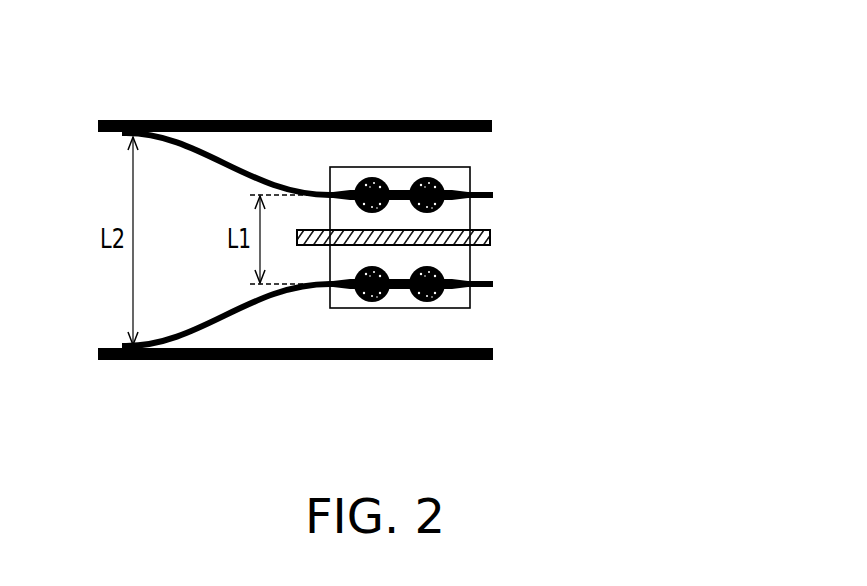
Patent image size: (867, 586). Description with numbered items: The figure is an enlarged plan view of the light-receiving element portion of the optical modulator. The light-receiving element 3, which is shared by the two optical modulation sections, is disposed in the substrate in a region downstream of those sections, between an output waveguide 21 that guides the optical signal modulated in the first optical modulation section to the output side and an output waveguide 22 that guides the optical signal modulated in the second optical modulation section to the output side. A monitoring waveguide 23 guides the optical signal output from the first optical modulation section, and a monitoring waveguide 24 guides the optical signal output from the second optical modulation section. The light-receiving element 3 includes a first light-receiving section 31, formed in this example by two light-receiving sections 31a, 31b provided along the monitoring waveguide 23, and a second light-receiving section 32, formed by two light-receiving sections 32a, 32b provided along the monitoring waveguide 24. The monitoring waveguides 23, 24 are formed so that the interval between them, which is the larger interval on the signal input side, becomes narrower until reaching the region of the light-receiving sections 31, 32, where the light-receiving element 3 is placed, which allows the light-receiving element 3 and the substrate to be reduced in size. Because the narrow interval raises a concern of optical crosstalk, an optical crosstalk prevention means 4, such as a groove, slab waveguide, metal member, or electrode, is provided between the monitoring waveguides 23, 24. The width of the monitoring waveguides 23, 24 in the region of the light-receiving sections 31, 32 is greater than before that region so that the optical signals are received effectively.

The light-receiving element 3 is at (352, 167).
The optical crosstalk prevention means 4 is at (490, 232).
The output waveguide 21 is at (492, 120).
The output waveguide 22 is at (480, 360).
The monitoring waveguide 23 is at (486, 195).
The monitoring waveguide 24 is at (492, 287).
The first light-receiving section 31 is at (470, 57).
The light-receiving section 31a is at (373, 178).
The light-receiving section 31b is at (428, 178).
The second light-receiving section 32 is at (470, 421).
The light-receiving section 32a is at (373, 302).
The light-receiving section 32b is at (428, 302).